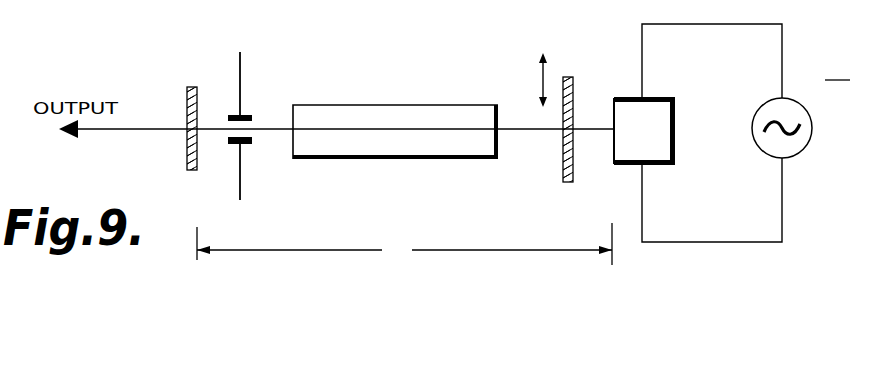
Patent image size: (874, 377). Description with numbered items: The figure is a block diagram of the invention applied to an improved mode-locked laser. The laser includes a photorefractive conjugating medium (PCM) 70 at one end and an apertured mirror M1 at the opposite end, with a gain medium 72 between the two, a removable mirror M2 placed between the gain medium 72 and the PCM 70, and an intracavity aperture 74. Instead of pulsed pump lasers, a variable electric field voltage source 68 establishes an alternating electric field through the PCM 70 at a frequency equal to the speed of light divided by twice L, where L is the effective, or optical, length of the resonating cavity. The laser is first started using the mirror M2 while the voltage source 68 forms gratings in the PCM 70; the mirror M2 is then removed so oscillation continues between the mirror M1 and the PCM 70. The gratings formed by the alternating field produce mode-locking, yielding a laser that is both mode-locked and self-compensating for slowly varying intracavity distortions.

The apertured mirror M1 is at (194, 122).
The removable mirror M2 is at (561, 114).
The intracavity aperture 74 is at (250, 146).
The gain medium 72 is at (432, 159).
The photorefractive conjugating medium 70 is at (687, 122).
The variable electric field voltage source 68 is at (797, 151).
The effective optical length of the resonating cavity L is at (404, 244).